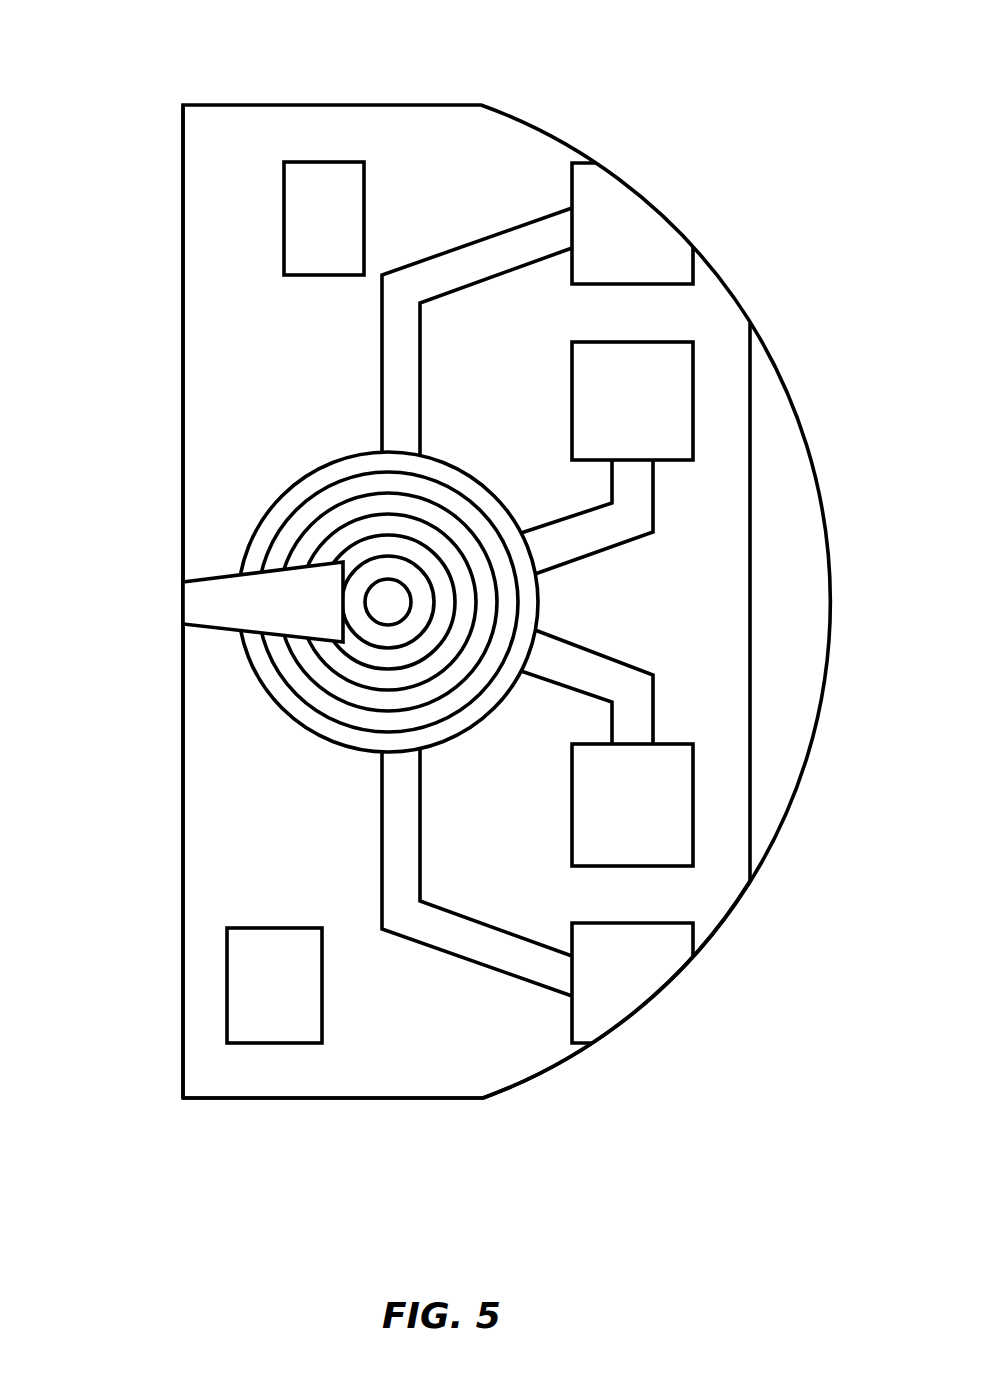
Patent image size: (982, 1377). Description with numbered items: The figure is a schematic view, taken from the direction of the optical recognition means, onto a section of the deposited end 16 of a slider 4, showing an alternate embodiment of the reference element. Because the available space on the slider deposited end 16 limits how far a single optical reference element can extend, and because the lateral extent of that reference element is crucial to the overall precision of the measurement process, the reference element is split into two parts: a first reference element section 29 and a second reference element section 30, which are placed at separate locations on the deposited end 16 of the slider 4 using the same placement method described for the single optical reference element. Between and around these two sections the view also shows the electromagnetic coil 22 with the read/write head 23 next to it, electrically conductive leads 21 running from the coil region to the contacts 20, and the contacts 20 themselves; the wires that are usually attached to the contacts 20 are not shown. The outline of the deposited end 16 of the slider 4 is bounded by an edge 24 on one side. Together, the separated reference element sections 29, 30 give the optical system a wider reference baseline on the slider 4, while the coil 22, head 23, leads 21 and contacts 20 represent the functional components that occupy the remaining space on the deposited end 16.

The slider 4 is at (317, 105).
The deposited end 16 is at (408, 1068).
The contacts 20 is at (663, 832).
The electrically conductive leads 21 is at (507, 262).
The electromagnetic coil 22 is at (287, 508).
The read/write head 23 is at (210, 603).
The side edge 24 is at (180, 860).
The first reference element section 29 is at (242, 995).
The second reference element section 30 is at (305, 202).